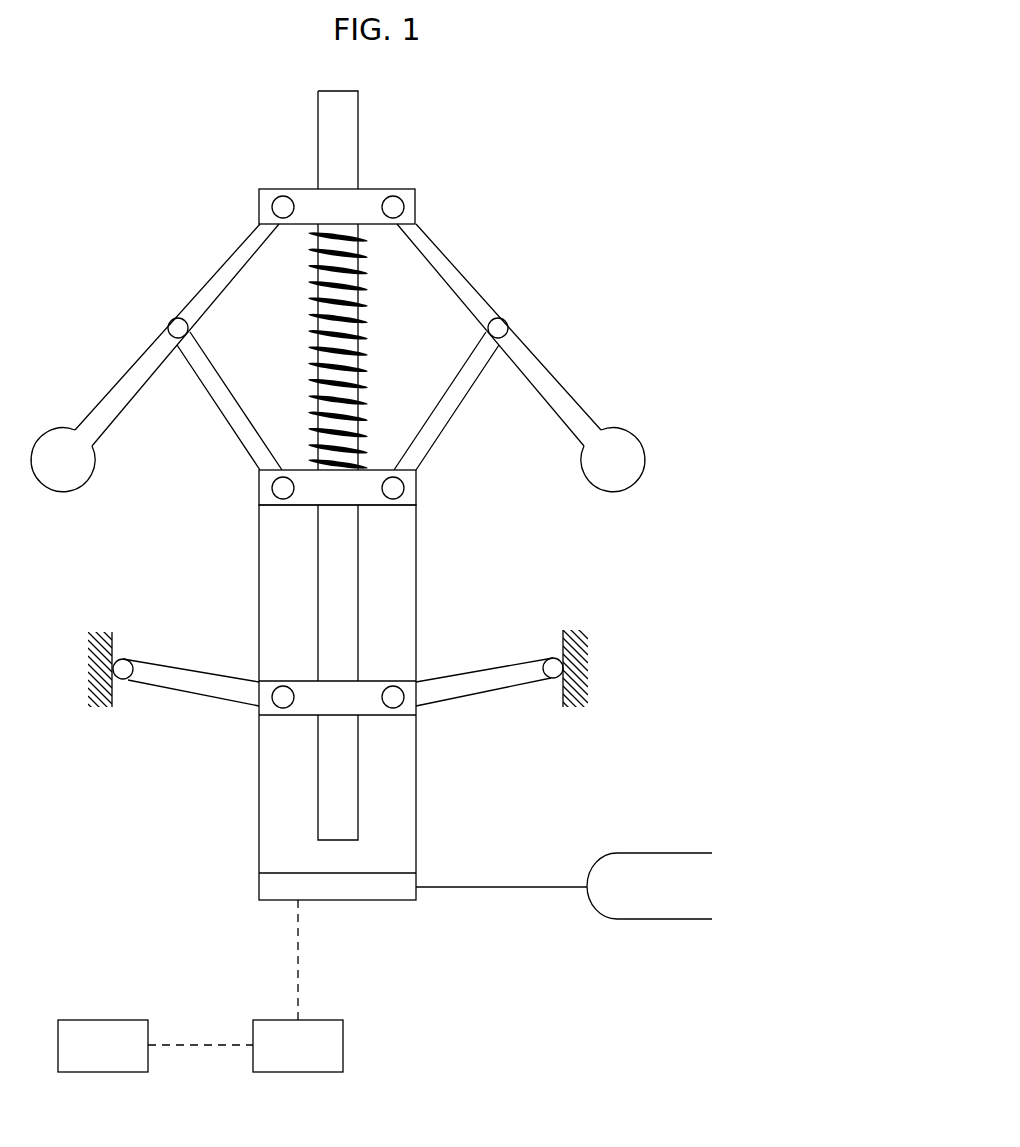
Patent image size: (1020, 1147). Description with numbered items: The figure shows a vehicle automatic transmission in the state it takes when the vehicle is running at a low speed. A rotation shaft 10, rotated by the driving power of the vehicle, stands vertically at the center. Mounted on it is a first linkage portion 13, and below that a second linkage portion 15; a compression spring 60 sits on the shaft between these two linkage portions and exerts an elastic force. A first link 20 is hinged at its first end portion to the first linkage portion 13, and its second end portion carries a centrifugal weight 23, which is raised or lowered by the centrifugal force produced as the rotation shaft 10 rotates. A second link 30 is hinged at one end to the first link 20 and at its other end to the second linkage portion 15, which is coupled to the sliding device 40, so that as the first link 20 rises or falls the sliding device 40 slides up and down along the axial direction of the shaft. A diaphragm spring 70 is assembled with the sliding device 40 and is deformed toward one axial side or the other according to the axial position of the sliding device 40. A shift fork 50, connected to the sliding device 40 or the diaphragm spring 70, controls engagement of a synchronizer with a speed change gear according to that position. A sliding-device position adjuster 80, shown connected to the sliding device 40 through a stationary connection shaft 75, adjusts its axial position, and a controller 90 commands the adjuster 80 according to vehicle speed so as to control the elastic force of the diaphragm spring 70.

The rotation shaft 10 is at (352, 141).
The first linkage portion 13 is at (415, 203).
The second linkage portion 15 is at (258, 492).
The first link 20 is at (481, 288).
The centrifugal weight 23 is at (625, 442).
The second link 30 is at (447, 418).
The sliding device 40 is at (416, 568).
The shift fork 50 is at (500, 887).
The compression spring 60 is at (312, 300).
The diaphragm spring 70 is at (168, 692).
The connection shaft 75 is at (298, 960).
The sliding-device position adjuster 80 is at (343, 1045).
The controller 90 is at (99, 1020).